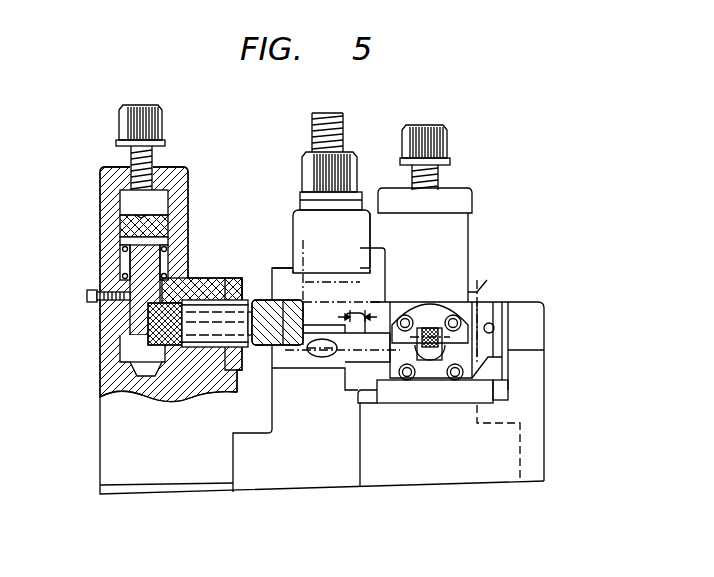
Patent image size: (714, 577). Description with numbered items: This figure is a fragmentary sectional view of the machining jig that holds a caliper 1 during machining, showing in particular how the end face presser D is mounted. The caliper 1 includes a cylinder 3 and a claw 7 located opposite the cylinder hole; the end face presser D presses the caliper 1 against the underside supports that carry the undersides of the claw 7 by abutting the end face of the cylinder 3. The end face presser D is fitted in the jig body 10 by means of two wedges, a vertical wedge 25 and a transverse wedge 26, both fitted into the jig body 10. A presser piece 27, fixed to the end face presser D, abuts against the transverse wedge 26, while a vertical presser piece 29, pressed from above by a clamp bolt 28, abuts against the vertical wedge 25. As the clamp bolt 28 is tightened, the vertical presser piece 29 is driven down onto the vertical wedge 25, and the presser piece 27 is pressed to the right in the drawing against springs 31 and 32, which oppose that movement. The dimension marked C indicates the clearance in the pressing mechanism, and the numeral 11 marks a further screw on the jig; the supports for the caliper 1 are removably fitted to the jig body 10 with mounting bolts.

The caliper 1 is at (272, 268).
The cylinder 3 is at (322, 258).
The claw 7 is at (477, 298).
The jig body 10 is at (100, 372).
The adjusting screw 11 is at (312, 132).
The vertical wedge 25 is at (190, 290).
The transverse wedge 26 is at (182, 394).
The presser piece 27 is at (238, 350).
The clamp bolt 28 is at (165, 121).
The vertical presser piece 29 is at (166, 228).
The spring 31 is at (170, 262).
The spring 32 is at (215, 393).
The clearance C is at (360, 322).
The end face presser D is at (308, 326).